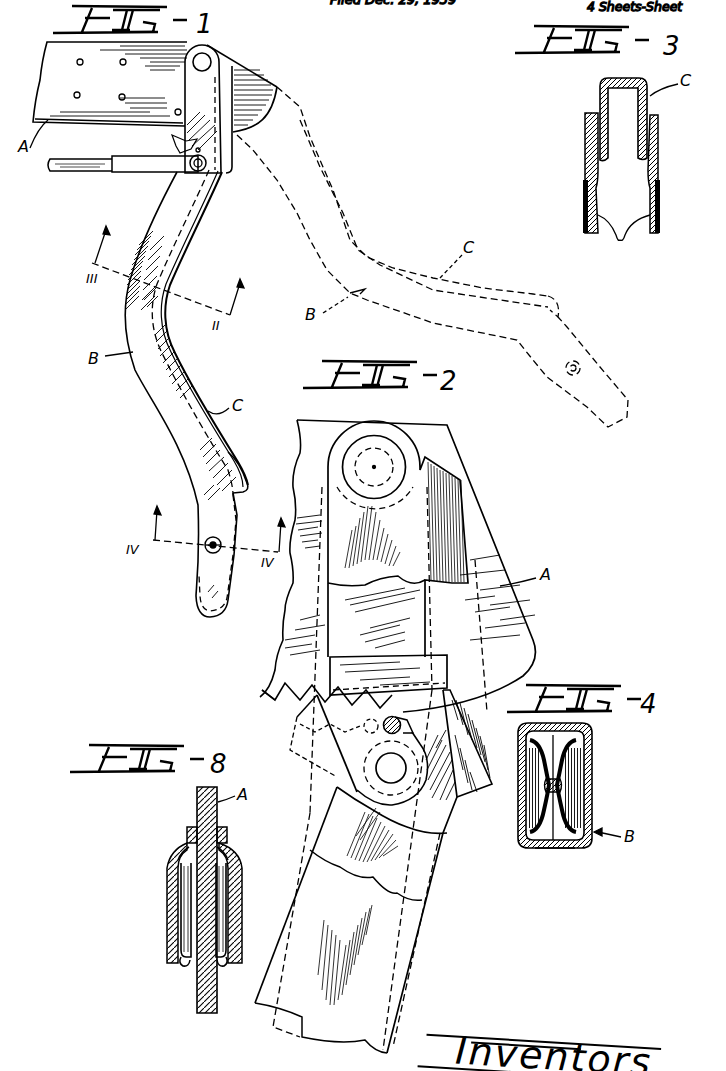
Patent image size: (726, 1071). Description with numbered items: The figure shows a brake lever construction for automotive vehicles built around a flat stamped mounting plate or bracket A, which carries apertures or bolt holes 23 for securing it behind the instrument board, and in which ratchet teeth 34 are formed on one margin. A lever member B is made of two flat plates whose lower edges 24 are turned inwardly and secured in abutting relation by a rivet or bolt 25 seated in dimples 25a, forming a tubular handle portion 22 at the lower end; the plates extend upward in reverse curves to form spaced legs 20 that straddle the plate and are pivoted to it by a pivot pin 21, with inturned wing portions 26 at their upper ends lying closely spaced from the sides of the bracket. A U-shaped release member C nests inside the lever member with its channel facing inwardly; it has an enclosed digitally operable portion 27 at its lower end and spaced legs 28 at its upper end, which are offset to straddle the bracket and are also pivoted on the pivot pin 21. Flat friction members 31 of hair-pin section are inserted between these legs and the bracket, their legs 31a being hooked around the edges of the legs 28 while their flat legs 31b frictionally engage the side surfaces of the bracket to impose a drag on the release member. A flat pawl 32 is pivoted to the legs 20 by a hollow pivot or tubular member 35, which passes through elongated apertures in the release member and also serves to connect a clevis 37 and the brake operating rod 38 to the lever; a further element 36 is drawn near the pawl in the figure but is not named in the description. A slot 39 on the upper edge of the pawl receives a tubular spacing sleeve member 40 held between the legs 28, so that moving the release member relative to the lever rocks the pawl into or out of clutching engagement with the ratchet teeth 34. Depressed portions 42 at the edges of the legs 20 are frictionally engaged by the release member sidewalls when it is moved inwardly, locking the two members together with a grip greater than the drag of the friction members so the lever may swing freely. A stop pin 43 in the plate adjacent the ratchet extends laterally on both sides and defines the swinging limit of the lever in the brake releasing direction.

In FIG. 1, the spaced legs 20 is at (158, 233).
In FIG. 3, the spaced legs 20 is at (585, 153).
In FIG. 8, the spaced legs 20 is at (167, 910).
In FIG. 1, the pivot pin 21 is at (209, 62).
In FIG. 2, the pivot pin 21 is at (398, 464).
In FIG. 1, the tubular handle portion 22 is at (193, 572).
In FIG. 4, the tubular handle portion 22 is at (594, 768).
In FIG. 1, the apertures or bolt holes 23 is at (120, 95).
In FIG. 4, the lower edges 24 is at (540, 850).
In FIG. 1, the rivet or bolt 25 is at (207, 549).
In FIG. 4, the rivet or bolt 25 is at (571, 790).
In FIG. 1, the dimples 25a is at (209, 541).
In FIG. 4, the dimples 25a is at (580, 806).
In FIG. 1, the inturned wing portions 26 is at (233, 162).
In FIG. 2, the inturned wing portions 26 is at (462, 520).
In FIG. 8, the inturned wing portions 26 is at (187, 832).
In FIG. 1, the digitally operable portion 27 is at (233, 458).
In FIG. 8, the spaced legs 28 is at (183, 886).
In FIG. 2, the friction members 31 is at (447, 680).
In FIG. 8, the friction members 31 is at (185, 967).
In FIG. 8, the legs of friction members 31a is at (176, 858).
In FIG. 8, the flat legs of friction members 31b is at (236, 856).
In FIG. 1, the pawl 32 is at (174, 143).
In FIG. 2, the pawl 32 is at (300, 722).
In FIG. 2, the ratchet teeth 34 is at (268, 688).
In FIG. 2, the hollow pivot or tubular member 35 is at (332, 790).
In FIG. 2, the pin 36 is at (359, 736).
In FIG. 1, the clevis 37 is at (140, 174).
In FIG. 1, the brake operating rod 38 is at (60, 173).
In FIG. 2, the slot 39 is at (402, 719).
In FIG. 2, the tubular spacing sleeve member 40 is at (403, 733).
In FIG. 1, the depressed portions 42 is at (143, 283).
In FIG. 3, the depressed portions 42 is at (624, 237).
In FIG. 1, the stop pin 43 is at (175, 115).